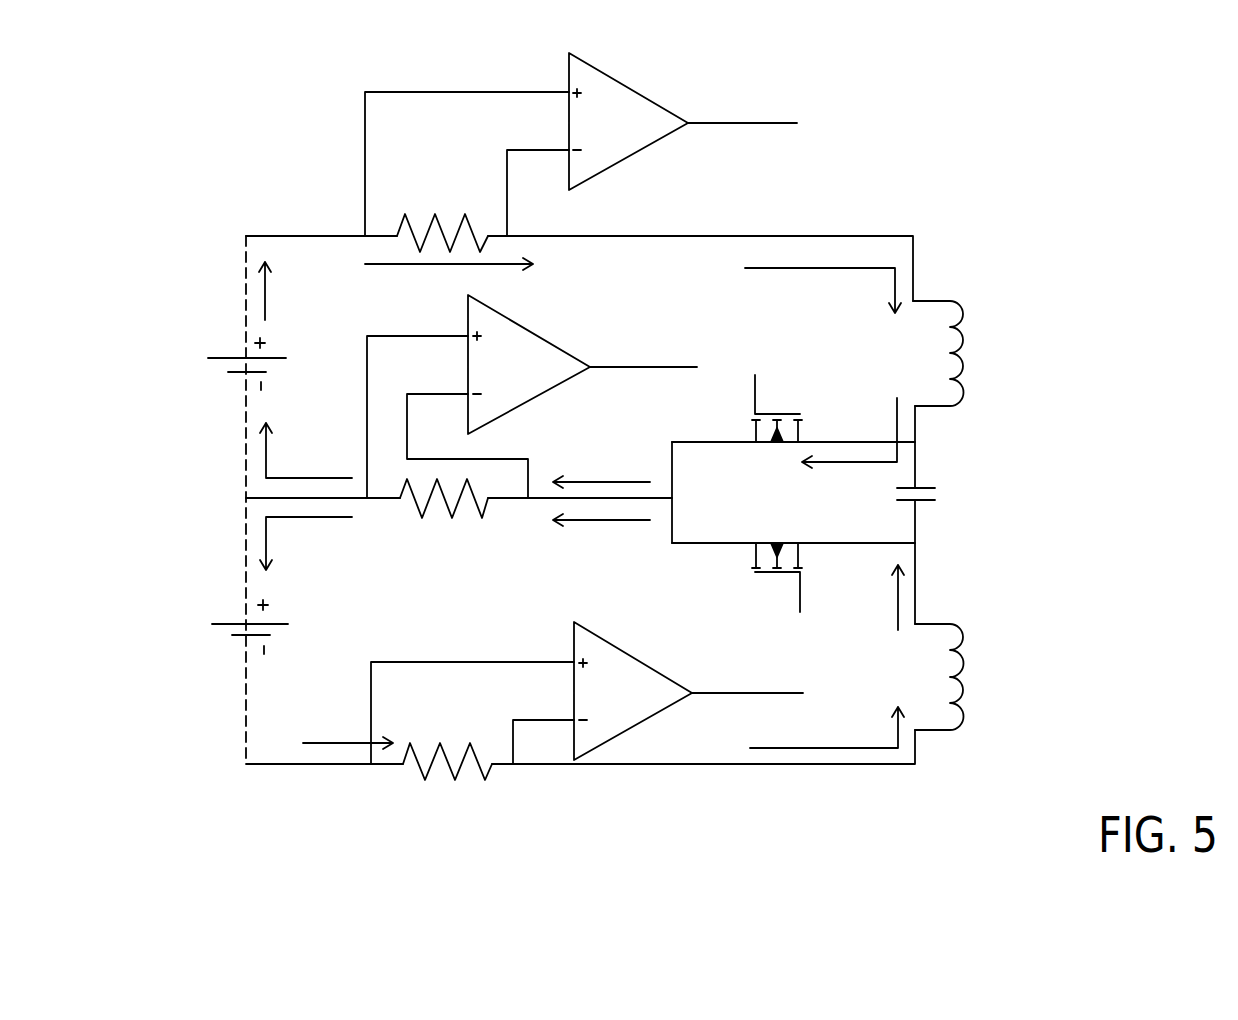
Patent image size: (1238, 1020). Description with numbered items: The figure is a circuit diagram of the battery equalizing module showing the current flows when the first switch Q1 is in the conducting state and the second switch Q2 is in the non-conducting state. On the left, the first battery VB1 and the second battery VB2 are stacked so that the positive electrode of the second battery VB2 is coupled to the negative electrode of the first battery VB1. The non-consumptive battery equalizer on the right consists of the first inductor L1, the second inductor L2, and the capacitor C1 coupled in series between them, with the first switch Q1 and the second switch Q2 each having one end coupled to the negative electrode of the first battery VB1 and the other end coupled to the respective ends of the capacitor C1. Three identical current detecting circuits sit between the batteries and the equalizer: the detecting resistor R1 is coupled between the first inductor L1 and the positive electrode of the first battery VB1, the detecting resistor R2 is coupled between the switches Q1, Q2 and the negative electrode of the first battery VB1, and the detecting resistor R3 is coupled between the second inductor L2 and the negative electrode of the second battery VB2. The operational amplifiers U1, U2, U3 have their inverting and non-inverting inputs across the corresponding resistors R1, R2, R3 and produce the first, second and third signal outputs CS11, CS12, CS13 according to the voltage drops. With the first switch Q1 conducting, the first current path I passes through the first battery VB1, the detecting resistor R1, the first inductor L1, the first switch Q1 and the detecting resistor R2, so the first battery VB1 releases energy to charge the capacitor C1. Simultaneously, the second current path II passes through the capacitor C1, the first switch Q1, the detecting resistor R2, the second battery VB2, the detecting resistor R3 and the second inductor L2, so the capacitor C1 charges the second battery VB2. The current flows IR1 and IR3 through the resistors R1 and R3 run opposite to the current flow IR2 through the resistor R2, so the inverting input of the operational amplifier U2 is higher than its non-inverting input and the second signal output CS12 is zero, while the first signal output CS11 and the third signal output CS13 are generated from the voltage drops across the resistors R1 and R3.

The operational amplifier U1 is at (526, 144).
The operational amplifier U2 is at (478, 396).
The operational amplifier U3 is at (531, 693).
The detecting resistor R1 is at (442, 219).
The detecting resistor R2 is at (444, 517).
The detecting resistor R3 is at (447, 779).
The first inductor L1 is at (953, 353).
The second inductor L2 is at (955, 677).
The capacitor C1 is at (932, 493).
The first switch Q1 is at (777, 408).
The second switch Q2 is at (777, 578).
The first battery VB1 is at (227, 364).
The second battery VB2 is at (231, 627).
The first signal output CS11 is at (758, 110).
The second signal output CS12 is at (656, 354).
The third signal output CS13 is at (762, 682).
The current flow IR1 is at (491, 265).
The current flow IR2 is at (601, 516).
The current flow IR3 is at (348, 731).
The first current path I is at (791, 314).
The second current path II is at (493, 595).